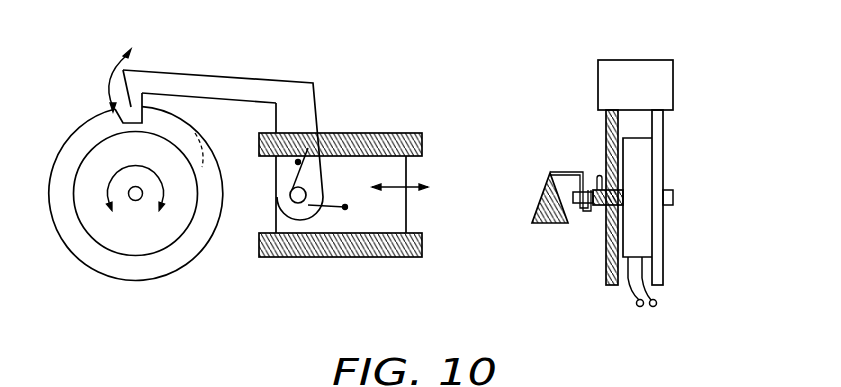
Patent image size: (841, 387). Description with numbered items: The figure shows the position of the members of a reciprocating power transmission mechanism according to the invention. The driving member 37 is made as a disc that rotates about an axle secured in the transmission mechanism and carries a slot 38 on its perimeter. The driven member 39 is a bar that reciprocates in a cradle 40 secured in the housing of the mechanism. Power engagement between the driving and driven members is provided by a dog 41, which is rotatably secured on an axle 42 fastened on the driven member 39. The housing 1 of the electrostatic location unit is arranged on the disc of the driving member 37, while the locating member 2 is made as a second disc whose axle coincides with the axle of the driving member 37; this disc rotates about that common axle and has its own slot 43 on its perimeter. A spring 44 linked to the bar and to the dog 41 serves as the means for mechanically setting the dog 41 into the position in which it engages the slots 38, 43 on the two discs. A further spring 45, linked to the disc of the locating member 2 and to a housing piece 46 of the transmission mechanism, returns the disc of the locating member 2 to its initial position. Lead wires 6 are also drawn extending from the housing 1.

The housing 1 is at (640, 222).
The locating member 2 is at (601, 239).
The lead wires 6 is at (652, 287).
The driving member 37 is at (663, 148).
The slot 38 is at (225, 171).
The driven member 39 is at (365, 220).
The cradle 40 is at (378, 138).
The dog 41 is at (232, 82).
The axle 42 is at (280, 200).
The slot 43 is at (259, 168).
The spring 44 is at (312, 238).
The spring 45 is at (592, 172).
The housing piece 46 is at (550, 227).